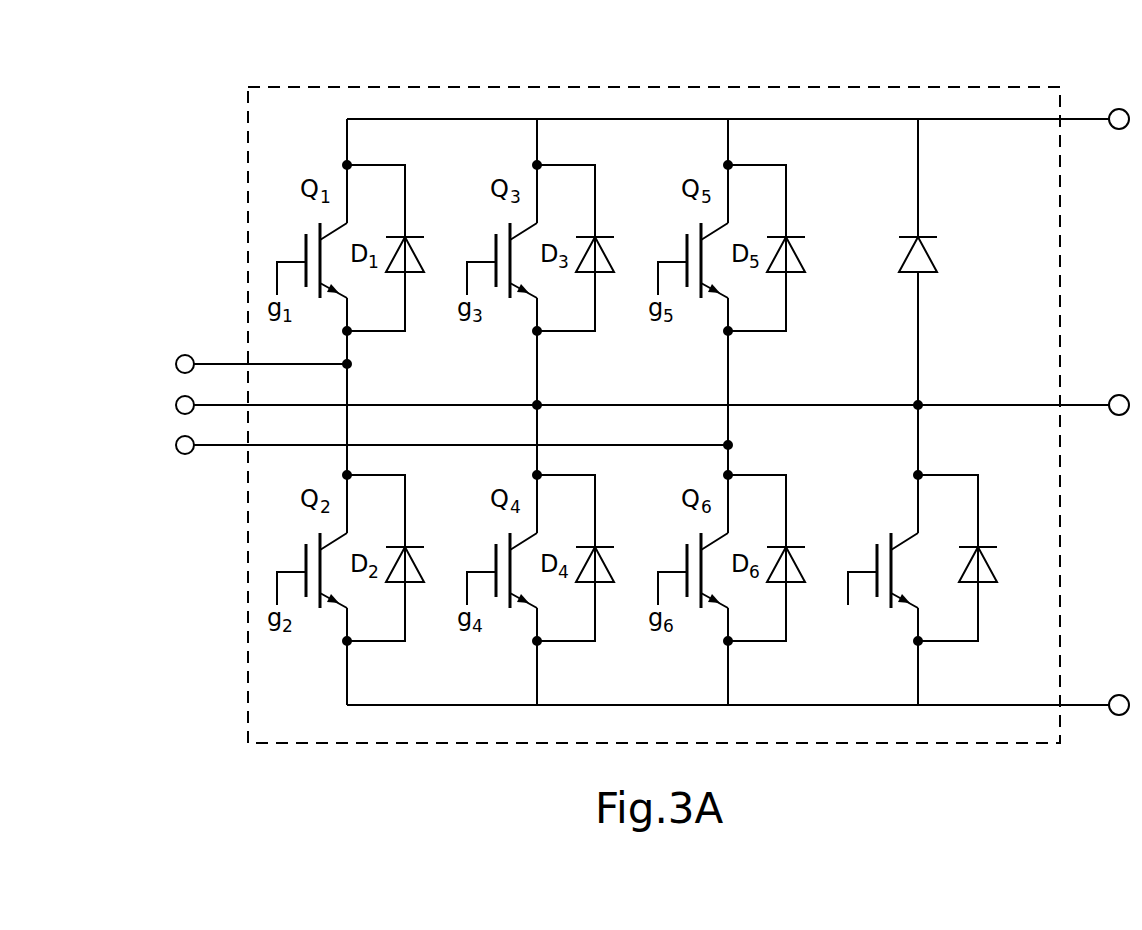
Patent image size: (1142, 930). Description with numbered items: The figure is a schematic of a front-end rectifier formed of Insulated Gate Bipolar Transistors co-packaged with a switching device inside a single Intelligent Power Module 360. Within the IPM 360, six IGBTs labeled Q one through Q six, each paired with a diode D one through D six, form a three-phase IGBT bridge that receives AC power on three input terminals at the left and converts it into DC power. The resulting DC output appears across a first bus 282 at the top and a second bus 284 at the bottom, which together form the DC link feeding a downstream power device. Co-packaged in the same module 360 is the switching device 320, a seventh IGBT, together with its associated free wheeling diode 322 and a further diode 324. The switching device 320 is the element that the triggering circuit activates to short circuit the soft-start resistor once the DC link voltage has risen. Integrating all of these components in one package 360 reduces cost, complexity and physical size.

The Intelligent Power Module 360 is at (248, 152).
The first bus 282 is at (1085, 119).
The second bus 284 is at (1085, 705).
The switching device 320 is at (876, 521).
The diode 322 is at (943, 224).
The diode 324 is at (997, 531).